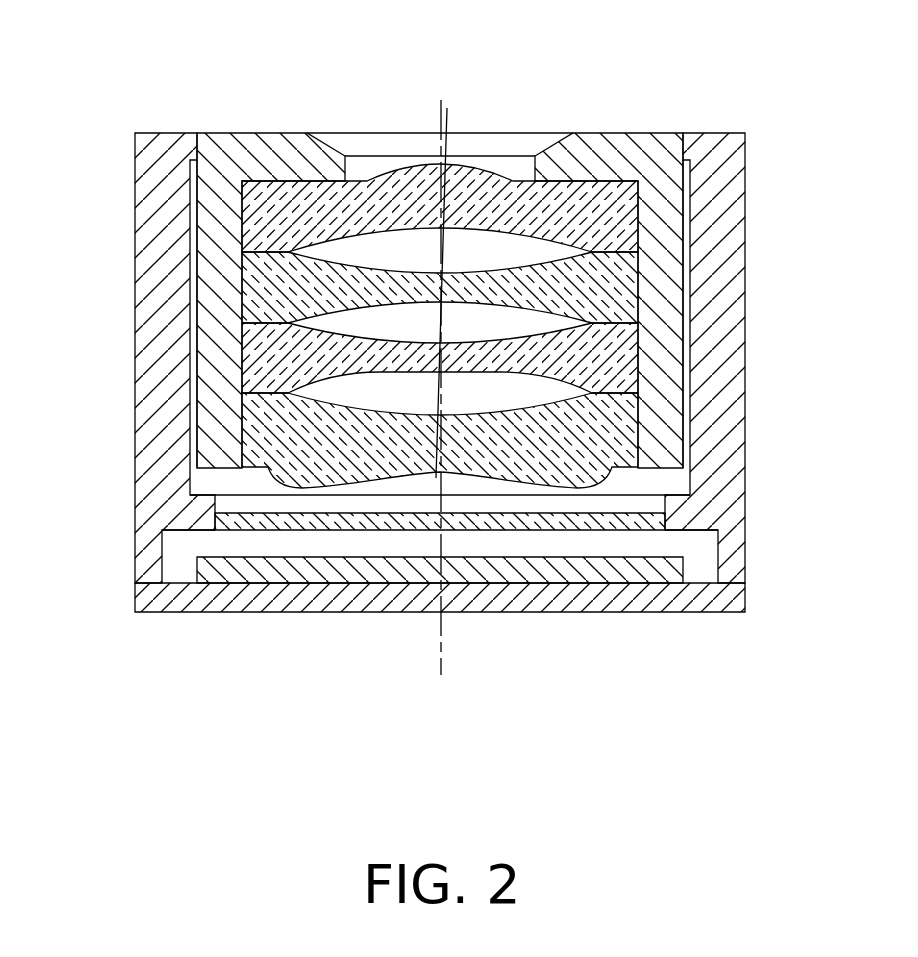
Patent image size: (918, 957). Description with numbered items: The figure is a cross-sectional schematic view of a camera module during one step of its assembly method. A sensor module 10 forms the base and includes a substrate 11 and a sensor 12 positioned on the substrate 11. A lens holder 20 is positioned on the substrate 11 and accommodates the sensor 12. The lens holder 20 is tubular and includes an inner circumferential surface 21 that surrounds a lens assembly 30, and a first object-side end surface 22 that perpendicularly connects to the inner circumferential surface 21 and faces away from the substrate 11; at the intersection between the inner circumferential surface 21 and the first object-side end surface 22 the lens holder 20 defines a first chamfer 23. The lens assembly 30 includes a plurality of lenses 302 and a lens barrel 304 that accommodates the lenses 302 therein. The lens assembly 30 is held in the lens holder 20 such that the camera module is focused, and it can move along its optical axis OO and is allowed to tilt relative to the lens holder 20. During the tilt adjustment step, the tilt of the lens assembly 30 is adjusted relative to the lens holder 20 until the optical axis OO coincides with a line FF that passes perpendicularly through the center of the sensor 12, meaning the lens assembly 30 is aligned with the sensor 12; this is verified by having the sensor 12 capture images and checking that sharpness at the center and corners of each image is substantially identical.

The sensor module 10 is at (440, 637).
The substrate 11 is at (637, 595).
The sensor 12 is at (660, 676).
The lens holder 20 is at (428, 327).
The inner circumferential surface 21 is at (192, 178).
The first object-side end surface 22 is at (150, 133).
The first chamfer 23 is at (707, 133).
The lens assembly 30 is at (442, 244).
The lenses 302 is at (614, 208).
The lens barrel 304 is at (590, 148).
The line FF' FF is at (441, 112).
The optical axis OO is at (447, 122).